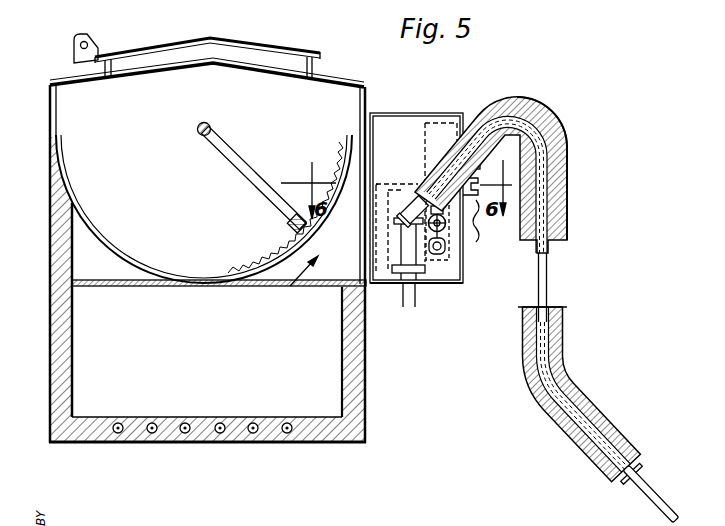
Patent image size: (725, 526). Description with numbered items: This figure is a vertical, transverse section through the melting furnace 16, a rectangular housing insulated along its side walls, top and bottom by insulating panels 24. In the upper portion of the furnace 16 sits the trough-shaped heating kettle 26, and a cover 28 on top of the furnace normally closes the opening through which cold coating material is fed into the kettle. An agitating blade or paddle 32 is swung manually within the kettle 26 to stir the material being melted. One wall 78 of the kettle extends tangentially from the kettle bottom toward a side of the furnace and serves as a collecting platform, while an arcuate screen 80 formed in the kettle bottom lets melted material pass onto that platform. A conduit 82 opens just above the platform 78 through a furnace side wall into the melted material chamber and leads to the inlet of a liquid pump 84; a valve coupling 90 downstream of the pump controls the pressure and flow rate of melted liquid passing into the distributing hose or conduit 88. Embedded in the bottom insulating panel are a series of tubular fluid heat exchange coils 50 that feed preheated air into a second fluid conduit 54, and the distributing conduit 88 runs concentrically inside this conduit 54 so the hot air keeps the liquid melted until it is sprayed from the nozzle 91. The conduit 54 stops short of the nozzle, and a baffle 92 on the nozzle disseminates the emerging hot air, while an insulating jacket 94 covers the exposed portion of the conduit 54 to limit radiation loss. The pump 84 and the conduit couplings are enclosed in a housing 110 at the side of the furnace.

The melting furnace 16 is at (394, 106).
The insulating panels 24 is at (328, 417).
The heating kettle 26 is at (170, 277).
The cover 28 is at (254, 57).
The agitating blade or paddle 32 is at (264, 184).
The tubular fluid heat exchange coils 50 is at (218, 404).
The second fluid conduit 54 is at (534, 103).
The wall (collecting platform) 78 is at (334, 286).
The arcuate screen 80 is at (304, 243).
The conduit 82 is at (380, 186).
The liquid pump 84 is at (286, 285).
The melted liquid distributing hose or conduit 88 is at (545, 285).
The valve coupling 90 is at (445, 223).
The nozzle 91 is at (657, 500).
The baffle 92 is at (644, 478).
The insulating jacket 94 is at (566, 122).
The housing 110 is at (466, 282).